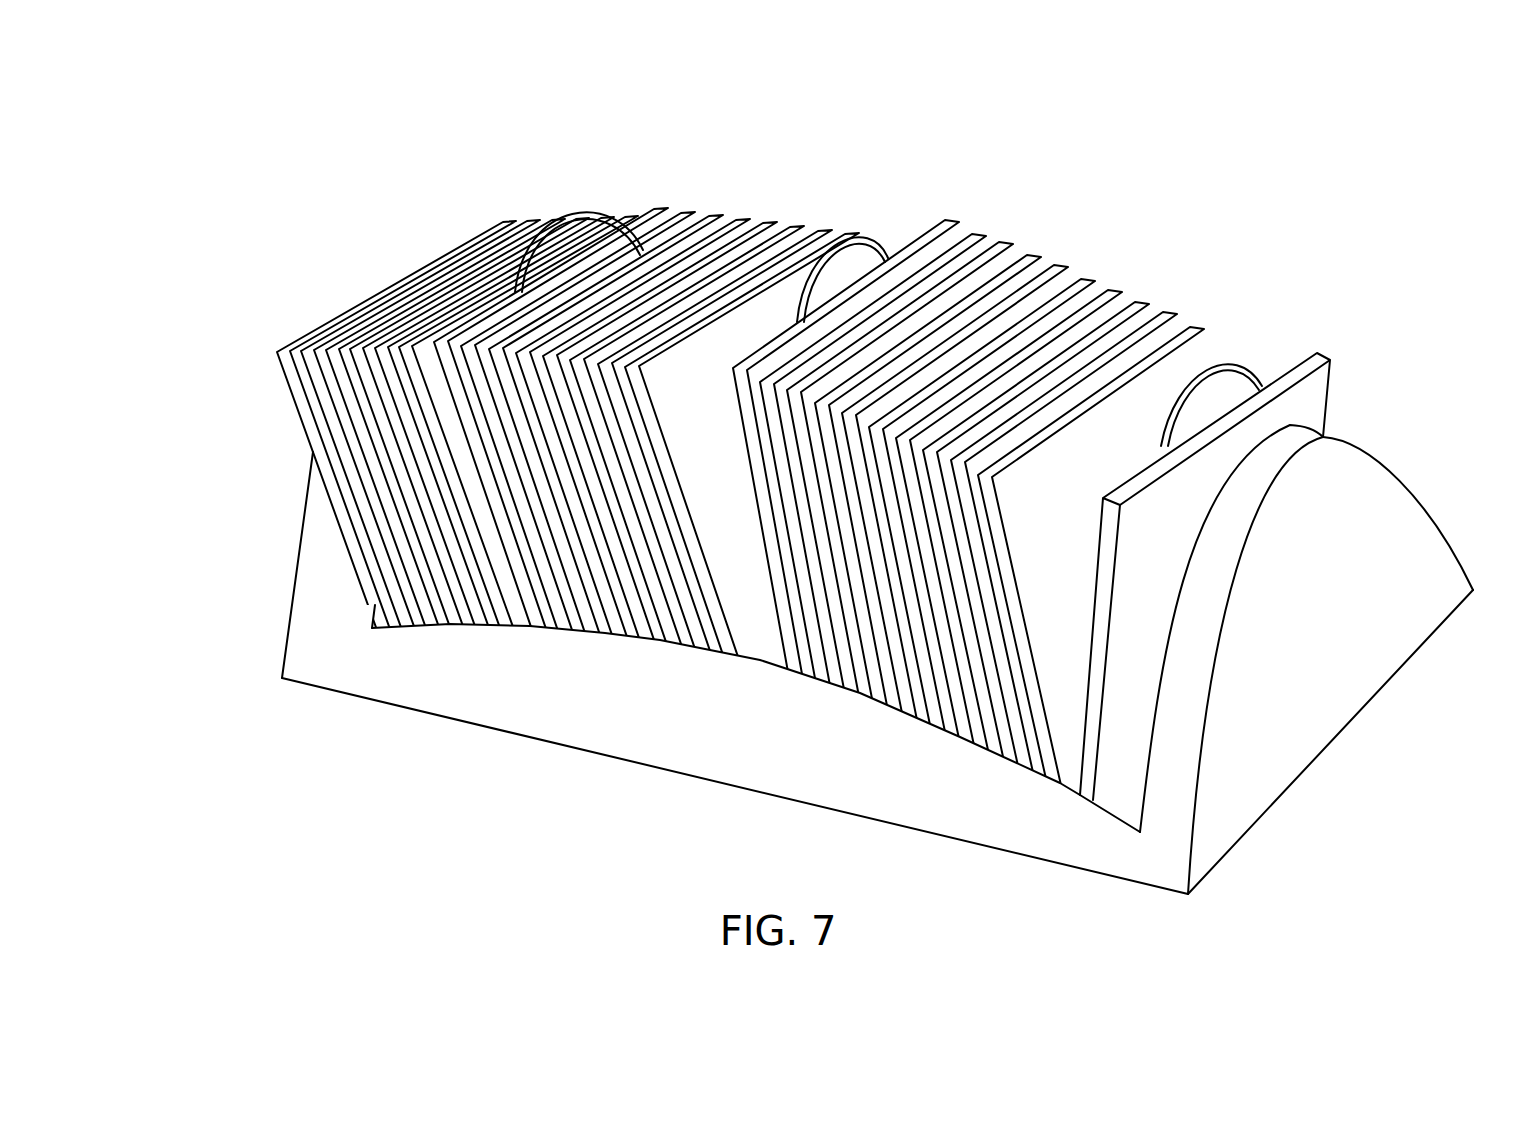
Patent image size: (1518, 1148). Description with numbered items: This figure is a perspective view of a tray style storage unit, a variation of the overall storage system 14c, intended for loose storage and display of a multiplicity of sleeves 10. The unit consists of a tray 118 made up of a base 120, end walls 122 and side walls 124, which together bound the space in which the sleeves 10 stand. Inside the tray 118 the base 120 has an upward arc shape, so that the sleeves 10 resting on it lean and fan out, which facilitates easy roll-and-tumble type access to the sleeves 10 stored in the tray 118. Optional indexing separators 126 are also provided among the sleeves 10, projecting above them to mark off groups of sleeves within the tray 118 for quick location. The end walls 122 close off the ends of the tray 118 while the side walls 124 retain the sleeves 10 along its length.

The storage system 14c is at (1207, 228).
The sleeve 10 is at (669, 407).
The indexing separator 126 is at (575, 210).
The end wall 122 is at (288, 648).
The side wall 124 is at (735, 745).
The tray 118 is at (1310, 555).
The base 120 is at (1213, 874).